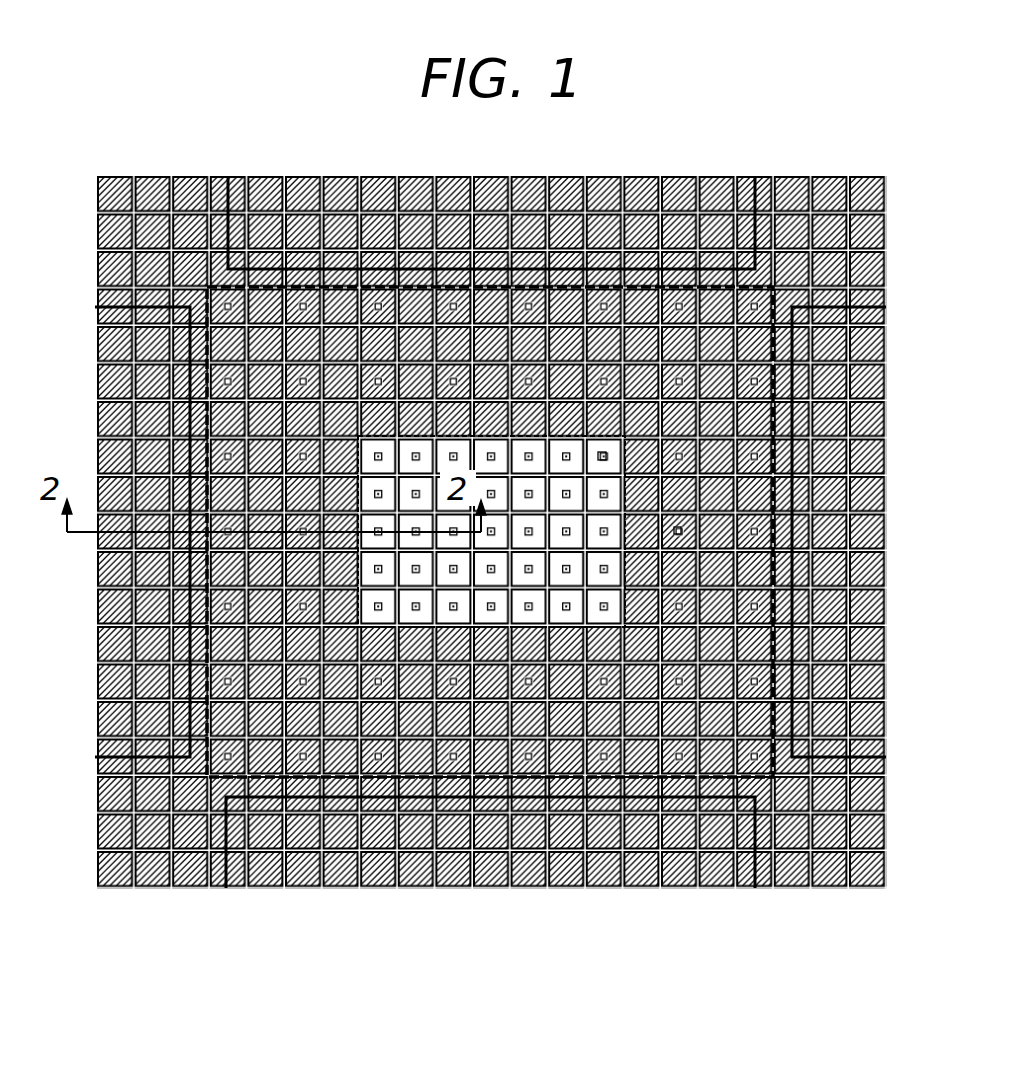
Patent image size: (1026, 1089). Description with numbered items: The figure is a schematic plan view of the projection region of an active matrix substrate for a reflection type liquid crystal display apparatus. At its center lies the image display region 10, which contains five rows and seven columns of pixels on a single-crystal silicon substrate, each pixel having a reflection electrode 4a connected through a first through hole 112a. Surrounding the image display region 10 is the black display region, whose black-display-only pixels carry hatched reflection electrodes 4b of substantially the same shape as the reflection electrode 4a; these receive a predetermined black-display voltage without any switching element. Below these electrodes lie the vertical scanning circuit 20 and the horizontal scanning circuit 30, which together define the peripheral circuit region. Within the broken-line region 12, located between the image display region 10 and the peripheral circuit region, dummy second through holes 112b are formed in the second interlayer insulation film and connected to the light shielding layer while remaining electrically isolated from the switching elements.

The reflection electrode 4a is at (618, 612).
The reflection electrode 4b is at (834, 882).
The image display region 10 is at (619, 434).
The region 12 is at (779, 297).
The vertical scanning circuit 20 is at (108, 766).
The horizontal scanning circuit 30 is at (756, 178).
The first through hole 112a is at (606, 460).
The second through hole 112b is at (680, 536).